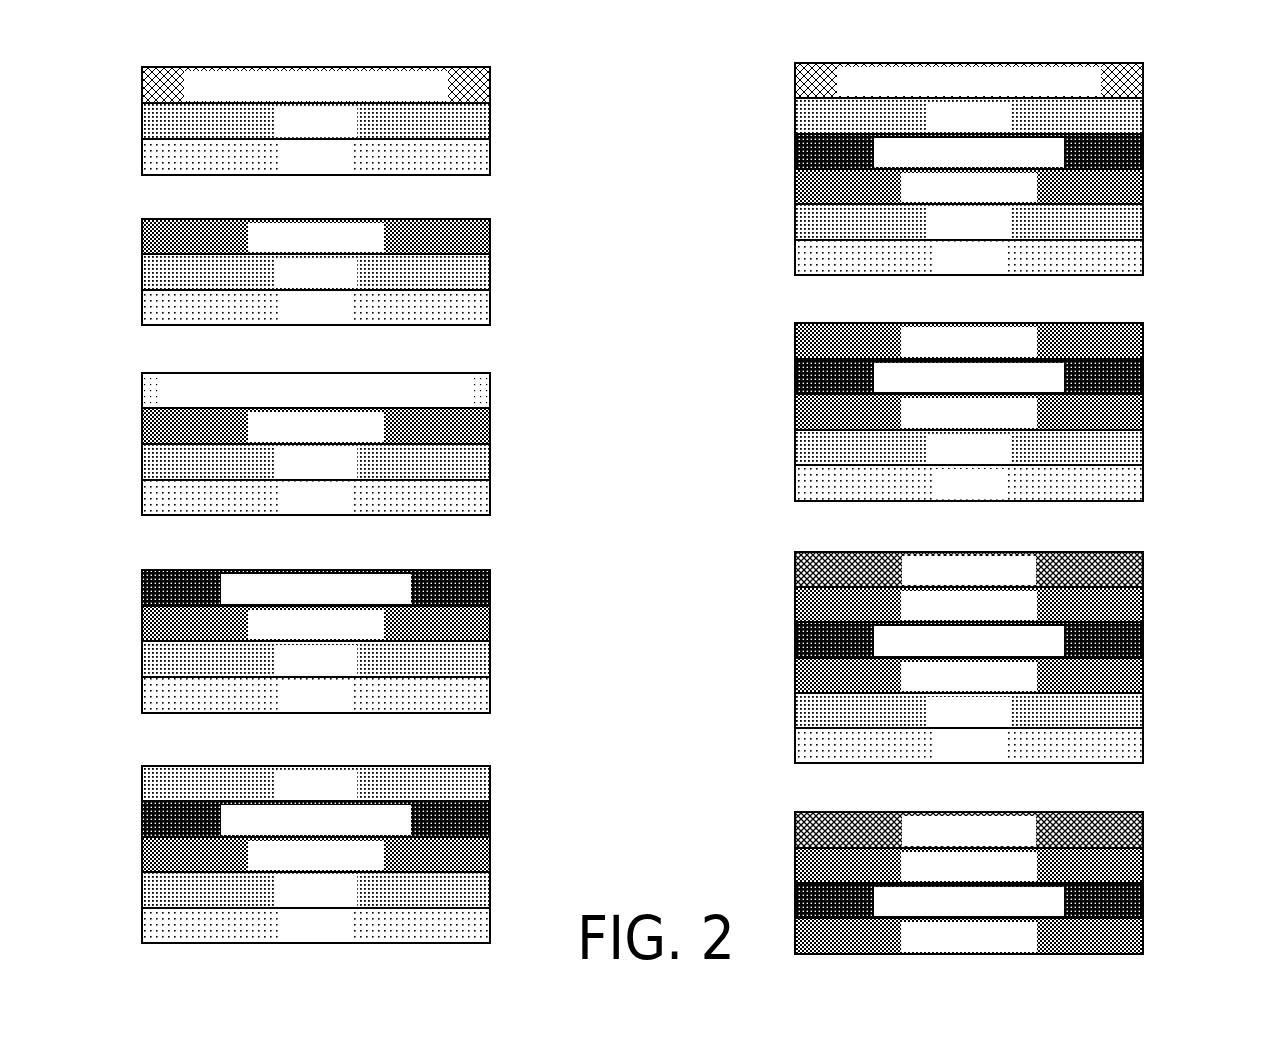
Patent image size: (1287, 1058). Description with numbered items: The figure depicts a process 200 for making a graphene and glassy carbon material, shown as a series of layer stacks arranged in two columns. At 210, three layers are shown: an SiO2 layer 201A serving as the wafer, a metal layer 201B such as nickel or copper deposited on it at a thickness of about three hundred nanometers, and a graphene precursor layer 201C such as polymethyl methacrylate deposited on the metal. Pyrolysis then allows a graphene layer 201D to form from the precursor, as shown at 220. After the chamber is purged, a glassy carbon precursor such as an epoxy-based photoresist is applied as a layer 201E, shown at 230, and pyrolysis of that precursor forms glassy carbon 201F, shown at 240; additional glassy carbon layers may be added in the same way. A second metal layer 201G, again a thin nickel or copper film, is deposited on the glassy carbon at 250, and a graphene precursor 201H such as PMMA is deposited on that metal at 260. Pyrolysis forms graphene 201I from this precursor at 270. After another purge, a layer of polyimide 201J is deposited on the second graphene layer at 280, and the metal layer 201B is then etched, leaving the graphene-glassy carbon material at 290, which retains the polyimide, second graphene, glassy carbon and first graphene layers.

The process 200 is at (708, 65).
The SiO2 layer 201A is at (490, 157).
The metal layer 201B is at (490, 121).
The graphene precursor layer 201C is at (490, 85).
The graphene layer 201D is at (490, 237).
The glassy carbon precursor layer 201E is at (490, 391).
The glassy carbon layer 201F is at (490, 588).
The second metal layer 201G is at (490, 784).
The graphene precursor 201H is at (1143, 81).
The graphene 201I is at (1143, 341).
The polyimide layer 201J is at (1143, 570).
The stage with SiO2, metal and graphene precursor layers 210 is at (142, 119).
The stage with graphene formed 220 is at (142, 270).
The stage with glassy carbon precursor applied 230 is at (142, 447).
The stage with glassy carbon formed 240 is at (142, 645).
The stage with second metal layer deposited 250 is at (142, 850).
The stage with second graphene precursor deposited 260 is at (795, 175).
The stage with second graphene formed 270 is at (795, 410).
The stage with polyimide deposited 280 is at (795, 638).
The graphene-glassy carbon material 290 is at (795, 882).